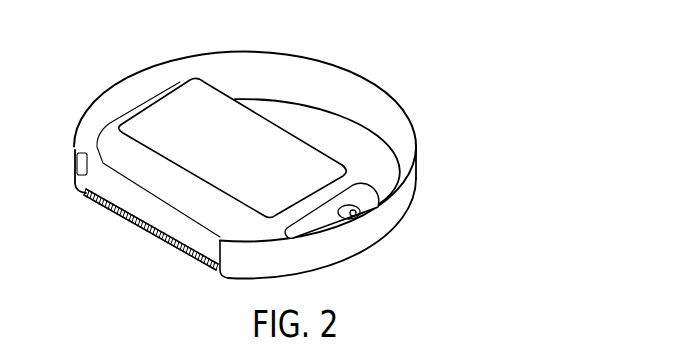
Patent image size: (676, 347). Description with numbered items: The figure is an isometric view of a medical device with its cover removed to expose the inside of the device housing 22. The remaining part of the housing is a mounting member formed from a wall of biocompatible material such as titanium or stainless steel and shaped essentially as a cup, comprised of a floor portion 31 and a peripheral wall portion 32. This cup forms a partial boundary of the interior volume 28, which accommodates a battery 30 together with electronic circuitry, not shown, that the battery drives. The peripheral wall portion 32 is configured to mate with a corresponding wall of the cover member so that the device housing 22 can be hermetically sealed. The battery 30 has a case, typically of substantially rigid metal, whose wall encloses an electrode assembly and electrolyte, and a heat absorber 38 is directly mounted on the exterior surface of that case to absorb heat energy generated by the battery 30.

The device housing 22 is at (410, 93).
The peripheral wall portion 32 is at (238, 62).
The floor portion 31 is at (287, 117).
The heat absorber 38 is at (243, 165).
The interior volume 28 is at (365, 165).
The battery 30 is at (365, 204).